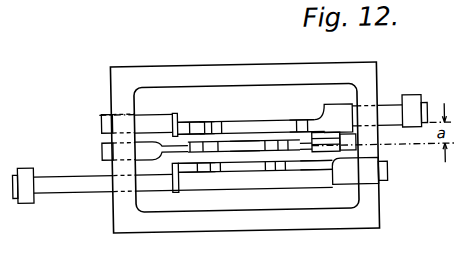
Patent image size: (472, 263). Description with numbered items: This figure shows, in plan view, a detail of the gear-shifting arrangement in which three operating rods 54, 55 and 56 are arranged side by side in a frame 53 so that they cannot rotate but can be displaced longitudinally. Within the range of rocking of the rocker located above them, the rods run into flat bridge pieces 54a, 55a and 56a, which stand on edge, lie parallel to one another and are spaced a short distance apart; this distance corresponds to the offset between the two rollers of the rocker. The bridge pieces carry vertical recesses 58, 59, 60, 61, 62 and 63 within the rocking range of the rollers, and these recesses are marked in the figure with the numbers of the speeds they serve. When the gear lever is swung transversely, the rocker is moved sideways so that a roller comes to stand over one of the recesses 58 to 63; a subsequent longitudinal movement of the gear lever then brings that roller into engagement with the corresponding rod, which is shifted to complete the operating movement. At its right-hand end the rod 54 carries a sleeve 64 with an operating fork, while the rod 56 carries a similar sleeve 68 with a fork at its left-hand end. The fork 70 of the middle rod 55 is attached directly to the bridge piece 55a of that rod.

The frame 53 is at (120, 66).
The operating rod 54 is at (100, 112).
The bridge piece 54a is at (228, 128).
The operating rod 55 is at (103, 146).
The bridge piece 55a is at (270, 147).
The operating rod 56 is at (85, 192).
The bridge piece 56a is at (277, 168).
The vertical recess 58 is at (196, 129).
The vertical recess 59 is at (203, 130).
The vertical recess 60 is at (300, 126).
The vertical recess 61 is at (264, 121).
The vertical recess 62 is at (205, 171).
The vertical recess 63 is at (320, 169).
The sleeve 64 is at (408, 101).
The sleeve 68 is at (28, 199).
The fork 70 is at (250, 150).